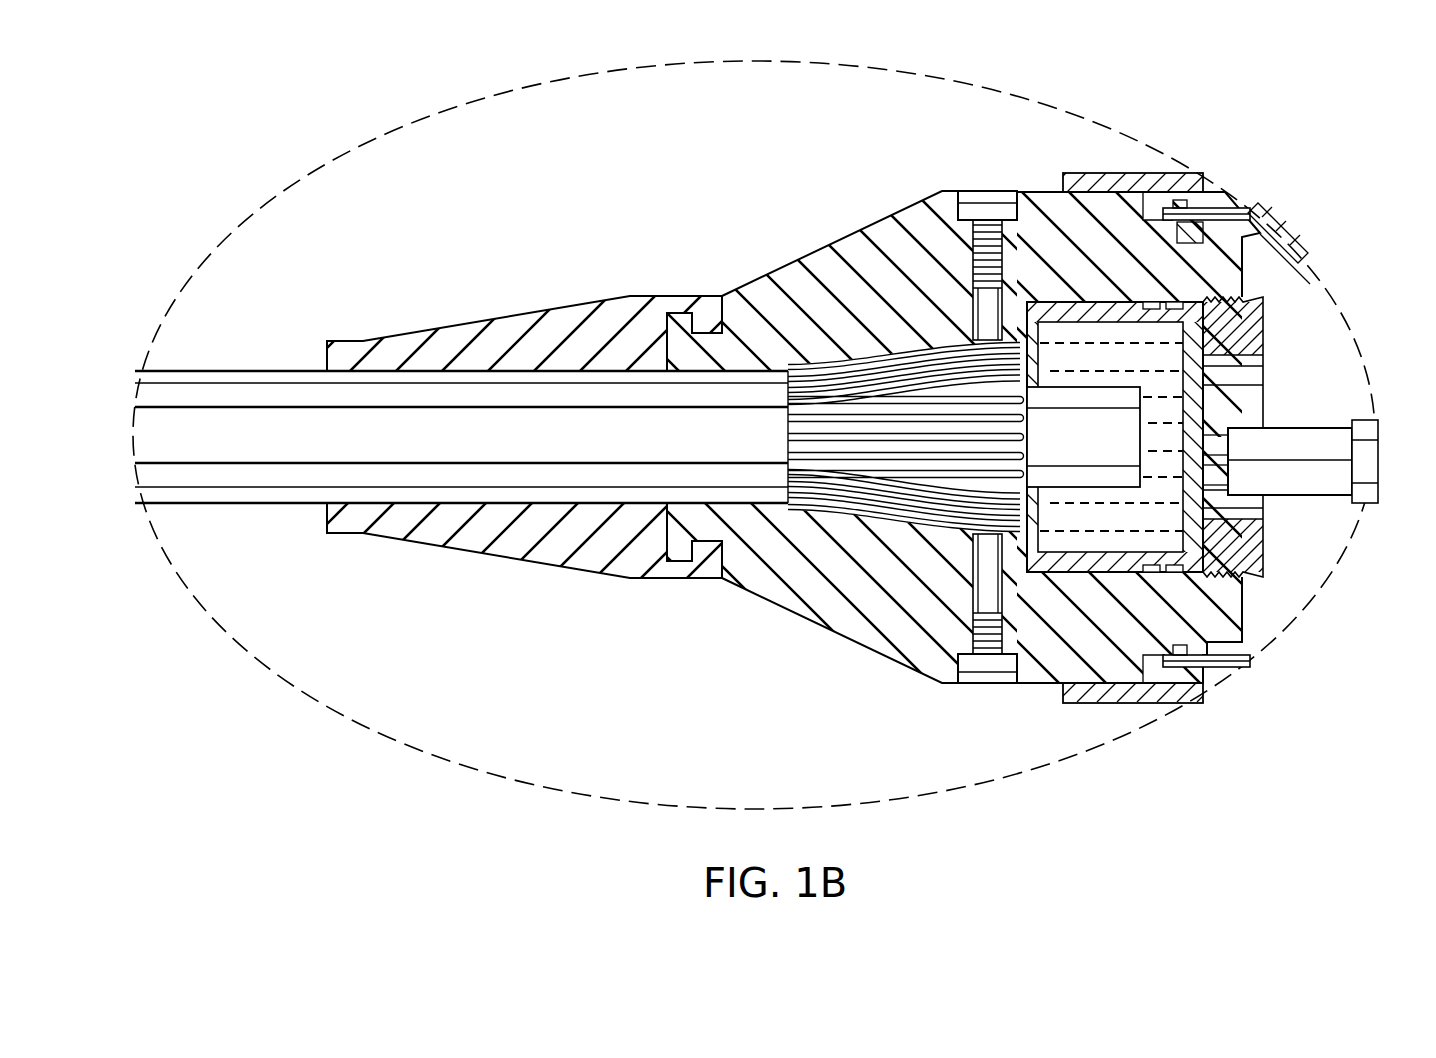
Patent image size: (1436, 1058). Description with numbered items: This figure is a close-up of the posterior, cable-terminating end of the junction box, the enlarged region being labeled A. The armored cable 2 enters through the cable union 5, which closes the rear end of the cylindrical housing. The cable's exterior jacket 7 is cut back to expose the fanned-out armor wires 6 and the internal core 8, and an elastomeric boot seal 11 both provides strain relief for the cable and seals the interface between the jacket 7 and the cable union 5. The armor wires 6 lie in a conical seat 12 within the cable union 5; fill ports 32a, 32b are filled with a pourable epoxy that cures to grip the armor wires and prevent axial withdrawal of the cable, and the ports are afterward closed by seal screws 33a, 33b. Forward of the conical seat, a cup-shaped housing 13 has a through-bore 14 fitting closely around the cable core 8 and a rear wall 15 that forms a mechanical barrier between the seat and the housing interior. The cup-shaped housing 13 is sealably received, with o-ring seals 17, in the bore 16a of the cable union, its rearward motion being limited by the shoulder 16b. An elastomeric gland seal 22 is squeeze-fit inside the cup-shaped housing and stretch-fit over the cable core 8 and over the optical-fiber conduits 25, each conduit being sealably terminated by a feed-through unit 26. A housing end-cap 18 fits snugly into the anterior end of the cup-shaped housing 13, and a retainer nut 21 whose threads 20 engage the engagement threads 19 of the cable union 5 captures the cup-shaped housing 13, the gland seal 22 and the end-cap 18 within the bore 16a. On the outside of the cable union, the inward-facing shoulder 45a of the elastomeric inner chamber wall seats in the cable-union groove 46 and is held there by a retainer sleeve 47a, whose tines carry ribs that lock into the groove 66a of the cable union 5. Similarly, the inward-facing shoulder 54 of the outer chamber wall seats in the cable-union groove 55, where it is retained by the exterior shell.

The armored cable 2 is at (222, 371).
The cable union 5 is at (838, 610).
The armor wires 6 is at (835, 367).
The exterior jacket 7 is at (180, 437).
The internal core 8 is at (1086, 450).
The elastomeric boot seal 11 is at (467, 553).
The conical seat 12 is at (842, 508).
The cup-shaped housing 13 is at (1085, 562).
The through-bore 14 is at (1072, 387).
The rear wall 15 is at (1072, 560).
The bore 16a is at (1088, 302).
The shoulder 16b is at (1032, 560).
The o-ring seals 17 is at (1240, 548).
The housing end-cap 18 is at (1200, 378).
The engagement threads 19 is at (1213, 575).
The housing-nut threads 20 is at (1268, 567).
The retainer nut 21 is at (1205, 360).
The elastomeric gland seal 22 is at (1165, 338).
The optical-fiber conduits 25 is at (1203, 436).
The feed-through units 26 is at (1327, 440).
The fill port 32a is at (975, 328).
The fill port 32b is at (987, 562).
The seal screw 33a is at (977, 200).
The seal screw 33b is at (968, 667).
The inward-facing shoulder 45a is at (1230, 667).
The cable-union groove 46 is at (1290, 616).
The retainer sleeve 47a is at (1237, 213).
The inward-facing shoulder 54 is at (1153, 205).
The cable-union groove 55 is at (1135, 230).
The groove 66a is at (1240, 232).
The detail region A is at (420, 784).